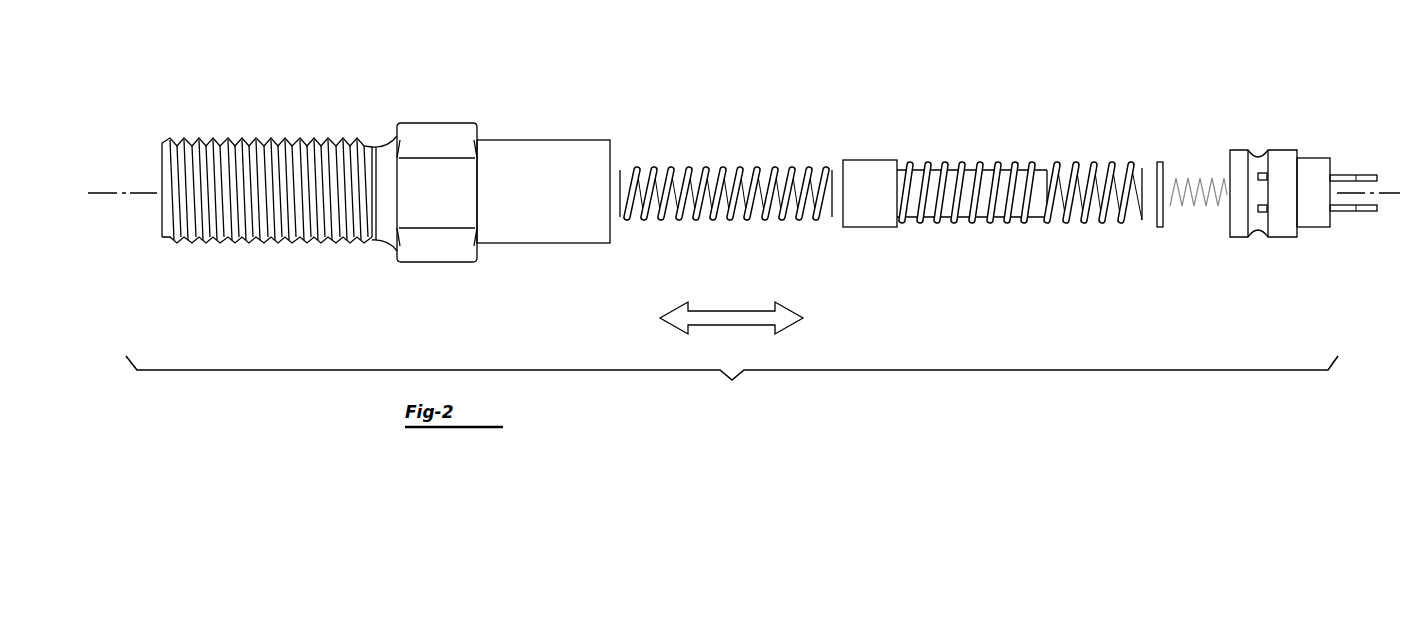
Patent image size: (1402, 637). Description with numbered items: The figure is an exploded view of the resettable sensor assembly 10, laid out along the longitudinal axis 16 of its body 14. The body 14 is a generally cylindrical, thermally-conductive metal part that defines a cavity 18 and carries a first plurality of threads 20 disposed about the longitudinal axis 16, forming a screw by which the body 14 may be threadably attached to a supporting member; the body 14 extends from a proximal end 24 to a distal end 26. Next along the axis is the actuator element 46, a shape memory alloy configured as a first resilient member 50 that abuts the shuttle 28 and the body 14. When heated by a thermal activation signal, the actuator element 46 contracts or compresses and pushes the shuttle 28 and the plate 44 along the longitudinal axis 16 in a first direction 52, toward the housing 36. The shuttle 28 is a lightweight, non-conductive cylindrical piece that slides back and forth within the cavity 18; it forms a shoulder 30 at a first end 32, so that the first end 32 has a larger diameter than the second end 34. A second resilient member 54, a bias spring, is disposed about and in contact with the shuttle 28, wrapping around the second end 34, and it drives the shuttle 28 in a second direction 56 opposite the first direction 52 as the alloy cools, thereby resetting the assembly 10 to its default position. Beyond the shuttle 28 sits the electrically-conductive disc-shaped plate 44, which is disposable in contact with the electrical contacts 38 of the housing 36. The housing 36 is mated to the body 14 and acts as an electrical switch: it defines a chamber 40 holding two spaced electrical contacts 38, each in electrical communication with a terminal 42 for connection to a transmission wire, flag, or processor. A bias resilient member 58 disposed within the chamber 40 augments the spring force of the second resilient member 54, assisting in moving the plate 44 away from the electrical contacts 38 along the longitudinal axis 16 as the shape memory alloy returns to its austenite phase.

The resettable sensor assembly 10 is at (732, 381).
The body 14 is at (491, 170).
The longitudinal axis 16 is at (136, 192).
The cavity 18 is at (726, 189).
The first plurality of threads 20 is at (267, 161).
The proximal end 24 is at (205, 142).
The distal end 26 is at (572, 140).
The shuttle 28 is at (951, 196).
The shoulder 30 is at (871, 196).
The first end 32 is at (845, 228).
The second end 34 is at (1045, 218).
The housing 36 is at (1283, 150).
The electrical contact 38 is at (1258, 177).
The chamber 40 is at (1289, 176).
The terminal 42 is at (1352, 175).
The plate 44 is at (1160, 162).
The actuator element 46 is at (726, 228).
The first resilient member 50 is at (726, 222).
The first direction 52 is at (762, 326).
The second resilient member 54 is at (1102, 163).
The second direction 56 is at (733, 318).
The bias resilient member 58 is at (1172, 210).